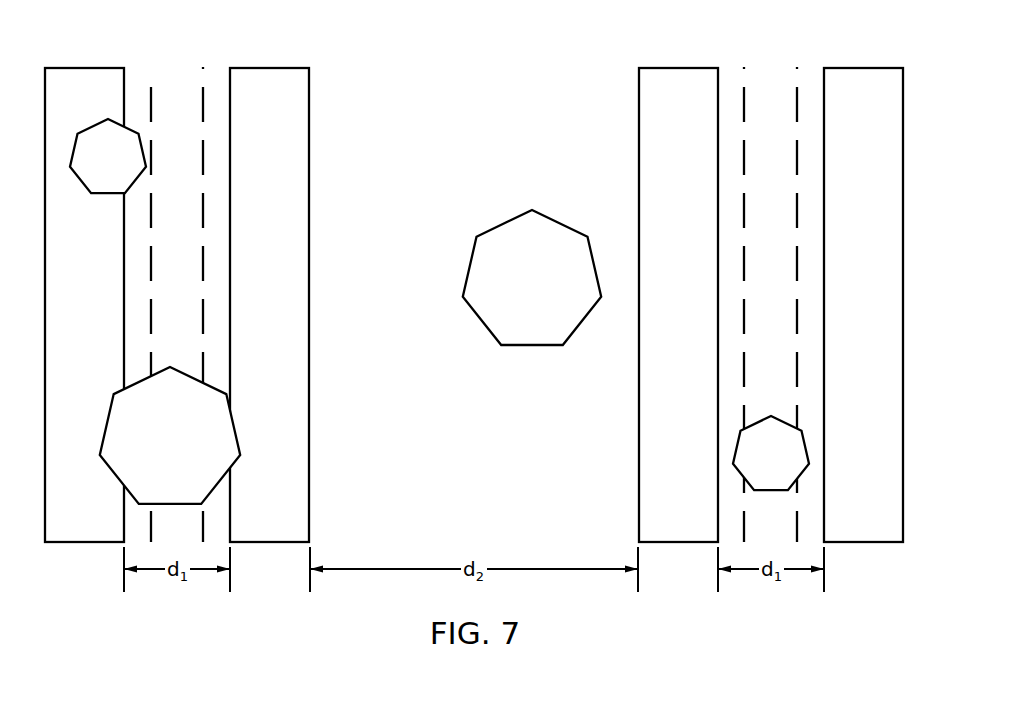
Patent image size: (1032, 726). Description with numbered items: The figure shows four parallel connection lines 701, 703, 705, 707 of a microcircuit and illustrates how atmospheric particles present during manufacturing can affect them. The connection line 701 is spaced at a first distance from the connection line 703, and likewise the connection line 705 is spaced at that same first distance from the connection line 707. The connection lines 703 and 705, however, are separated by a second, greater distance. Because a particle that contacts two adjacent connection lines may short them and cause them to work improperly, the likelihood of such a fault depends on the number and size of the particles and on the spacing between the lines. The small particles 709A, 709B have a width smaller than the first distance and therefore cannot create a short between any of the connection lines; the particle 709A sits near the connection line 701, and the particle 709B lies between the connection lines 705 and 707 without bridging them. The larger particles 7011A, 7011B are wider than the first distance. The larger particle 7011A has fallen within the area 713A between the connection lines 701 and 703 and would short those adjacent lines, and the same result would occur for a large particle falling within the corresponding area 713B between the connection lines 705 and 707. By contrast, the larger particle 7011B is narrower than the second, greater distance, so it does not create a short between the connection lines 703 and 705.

The connection line 701 is at (66, 315).
The connection line 703 is at (251, 315).
The connection line 705 is at (660, 315).
The connection line 707 is at (845, 315).
The particle 709A is at (108, 156).
The particle 709B is at (771, 453).
The larger particle 7011A is at (170, 435).
The larger particle 7011B is at (532, 277).
The area 713A is at (174, 74).
The area 713B is at (769, 80).